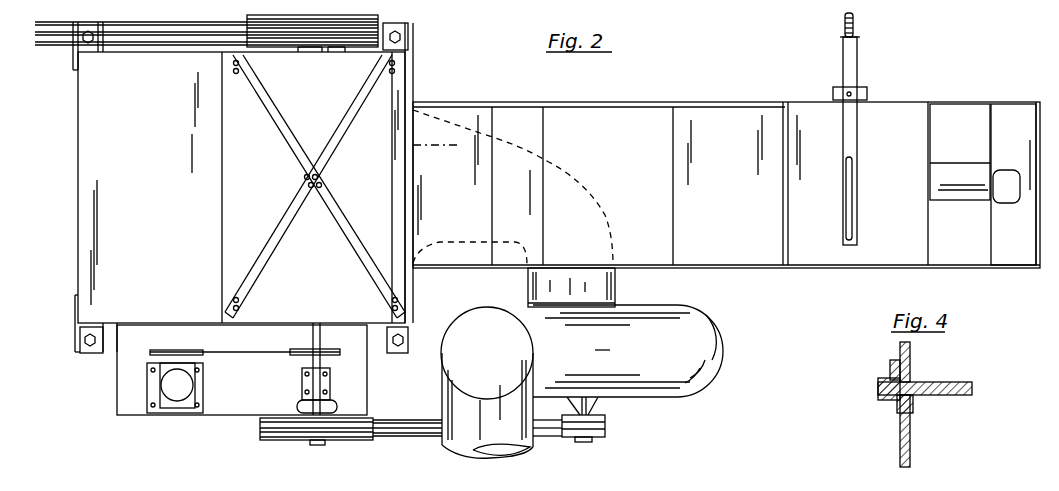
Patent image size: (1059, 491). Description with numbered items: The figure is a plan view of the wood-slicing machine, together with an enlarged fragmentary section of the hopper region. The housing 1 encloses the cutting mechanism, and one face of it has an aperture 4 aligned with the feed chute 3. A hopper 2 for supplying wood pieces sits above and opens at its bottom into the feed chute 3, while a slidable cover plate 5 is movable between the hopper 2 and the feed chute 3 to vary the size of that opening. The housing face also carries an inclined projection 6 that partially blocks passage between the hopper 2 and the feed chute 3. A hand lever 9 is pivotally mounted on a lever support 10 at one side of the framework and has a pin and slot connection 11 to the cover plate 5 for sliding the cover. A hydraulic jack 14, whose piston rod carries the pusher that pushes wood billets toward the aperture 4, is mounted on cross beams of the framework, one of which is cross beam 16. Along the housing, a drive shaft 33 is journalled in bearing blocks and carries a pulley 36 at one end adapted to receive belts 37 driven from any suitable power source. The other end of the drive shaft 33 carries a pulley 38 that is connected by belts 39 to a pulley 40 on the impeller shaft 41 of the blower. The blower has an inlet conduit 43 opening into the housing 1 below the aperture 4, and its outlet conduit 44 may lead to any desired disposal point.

In FIG. 2, the housing 1 is at (76, 186).
In FIG. 2, the hopper 2 is at (696, 107).
In FIG. 4, the hopper 2 is at (910, 368).
In FIG. 2, the feed chute 3 is at (524, 195).
In FIG. 4, the feed chute 3 is at (910, 449).
In FIG. 2, the aperture 4 is at (633, 88).
In FIG. 2, the slidable cover plate 5 is at (634, 195).
In FIG. 4, the slidable cover plate 5 is at (963, 383).
In FIG. 2, the inclined projection 6 is at (452, 173).
In FIG. 2, the hand lever 9 is at (851, 147).
In FIG. 2, the lever support 10 is at (868, 95).
In FIG. 2, the pin and slot connection 11 is at (849, 184).
In FIG. 2, the hydraulic jack 14 is at (954, 170).
In FIG. 2, the cross beam 16 is at (1020, 153).
In FIG. 2, the drive shaft 33 is at (306, 48).
In FIG. 2, the pulley 36 is at (338, 48).
In FIG. 2, the belts 37 is at (178, 44).
In FIG. 2, the pulley 38 is at (291, 440).
In FIG. 2, the belts 39 is at (418, 437).
In FIG. 2, the pulley 40 is at (601, 440).
In FIG. 2, the impeller shaft 41 is at (590, 414).
In FIG. 2, the inlet conduit 43 is at (595, 287).
In FIG. 2, the outlet conduit 44 is at (500, 456).